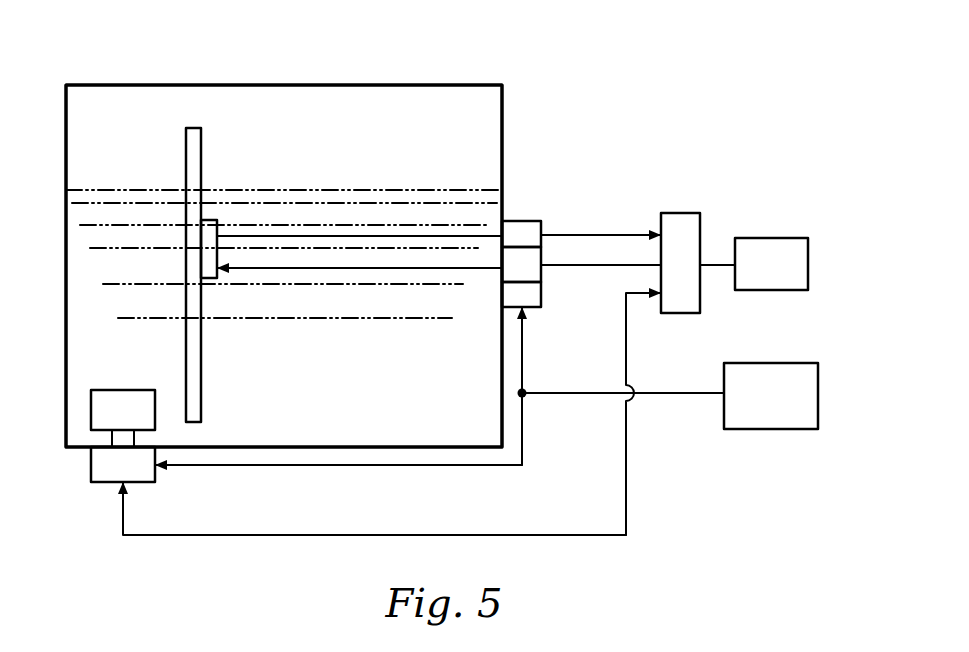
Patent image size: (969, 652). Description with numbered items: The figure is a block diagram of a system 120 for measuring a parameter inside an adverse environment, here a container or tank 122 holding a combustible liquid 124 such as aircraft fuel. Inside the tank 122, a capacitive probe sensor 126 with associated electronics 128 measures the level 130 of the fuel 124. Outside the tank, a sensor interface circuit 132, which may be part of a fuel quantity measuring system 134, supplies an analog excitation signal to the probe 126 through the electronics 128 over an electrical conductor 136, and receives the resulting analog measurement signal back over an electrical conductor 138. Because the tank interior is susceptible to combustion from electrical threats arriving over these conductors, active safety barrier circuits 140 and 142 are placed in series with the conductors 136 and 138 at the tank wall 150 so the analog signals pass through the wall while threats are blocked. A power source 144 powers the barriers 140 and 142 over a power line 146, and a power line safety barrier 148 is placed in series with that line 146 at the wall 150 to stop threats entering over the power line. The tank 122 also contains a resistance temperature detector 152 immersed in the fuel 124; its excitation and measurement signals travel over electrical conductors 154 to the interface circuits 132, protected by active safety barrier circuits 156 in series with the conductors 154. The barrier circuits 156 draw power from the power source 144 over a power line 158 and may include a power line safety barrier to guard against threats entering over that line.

The system 120 is at (674, 104).
The container 122 is at (447, 90).
The combustible liquid 124 is at (359, 392).
The capacitive probe sensor 126 is at (203, 162).
The electronics 128 is at (208, 280).
The level 130 is at (378, 192).
The sensor interface circuit 132 is at (702, 227).
The fuel quantity measuring system 134 is at (773, 292).
The electrical conductor 136 is at (587, 267).
The electrical conductor 138 is at (632, 232).
The active safety barrier circuit 140 is at (542, 257).
The active safety barrier circuit 142 is at (523, 228).
The power source 144 is at (770, 430).
The power line 146 is at (593, 395).
The power line safety barrier 148 is at (542, 297).
The tank wall 150 is at (503, 156).
The resistance temperature detector 152 is at (127, 390).
The electrical conductors 154 is at (335, 537).
The active safety barrier circuits 156 is at (143, 483).
The power line 158 is at (308, 465).